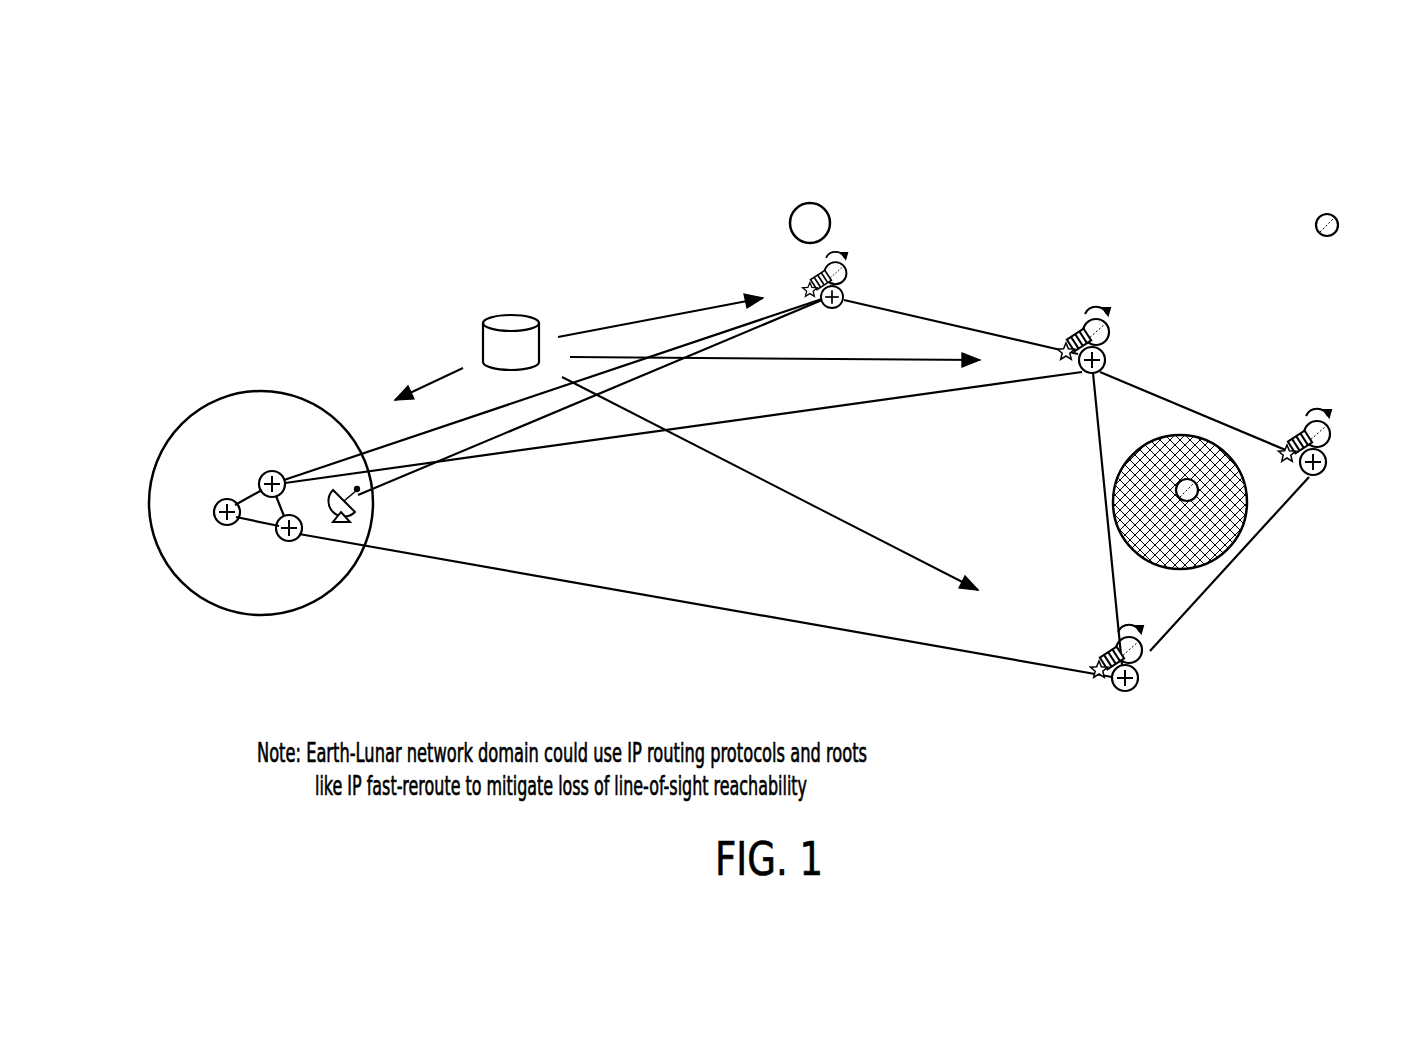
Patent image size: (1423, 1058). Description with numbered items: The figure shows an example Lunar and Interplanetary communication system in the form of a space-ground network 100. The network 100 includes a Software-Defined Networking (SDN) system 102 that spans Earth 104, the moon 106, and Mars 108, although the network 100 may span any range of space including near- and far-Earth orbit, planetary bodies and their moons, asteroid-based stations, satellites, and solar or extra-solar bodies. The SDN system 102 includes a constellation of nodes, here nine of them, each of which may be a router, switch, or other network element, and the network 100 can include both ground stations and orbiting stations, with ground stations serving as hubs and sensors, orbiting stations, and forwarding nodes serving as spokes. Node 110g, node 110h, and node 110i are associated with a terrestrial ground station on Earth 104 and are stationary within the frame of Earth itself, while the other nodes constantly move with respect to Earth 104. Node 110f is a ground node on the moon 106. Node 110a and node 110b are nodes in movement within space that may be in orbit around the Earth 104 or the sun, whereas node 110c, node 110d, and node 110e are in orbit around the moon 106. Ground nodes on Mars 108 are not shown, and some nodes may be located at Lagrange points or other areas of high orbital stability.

The network 100 is at (1345, 150).
The Software-Defined Networking (SDN) system 102 is at (511, 315).
The Earth 104 is at (270, 616).
The moon 106 is at (1160, 458).
The Mars 108 is at (830, 227).
The node 110a is at (1338, 225).
The node 110b is at (842, 270).
The node 110c is at (1108, 338).
The node 110d is at (1330, 440).
The node 110e is at (1148, 660).
The node 110f is at (1187, 501).
The node 110g is at (301, 526).
The node 110h is at (216, 520).
The node 110i is at (272, 471).